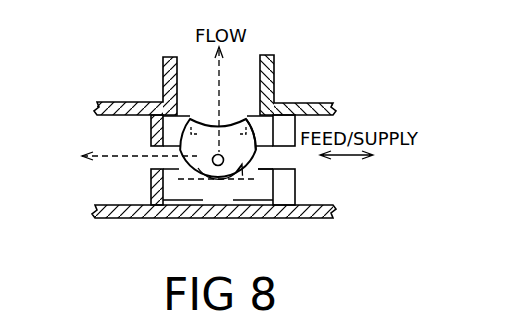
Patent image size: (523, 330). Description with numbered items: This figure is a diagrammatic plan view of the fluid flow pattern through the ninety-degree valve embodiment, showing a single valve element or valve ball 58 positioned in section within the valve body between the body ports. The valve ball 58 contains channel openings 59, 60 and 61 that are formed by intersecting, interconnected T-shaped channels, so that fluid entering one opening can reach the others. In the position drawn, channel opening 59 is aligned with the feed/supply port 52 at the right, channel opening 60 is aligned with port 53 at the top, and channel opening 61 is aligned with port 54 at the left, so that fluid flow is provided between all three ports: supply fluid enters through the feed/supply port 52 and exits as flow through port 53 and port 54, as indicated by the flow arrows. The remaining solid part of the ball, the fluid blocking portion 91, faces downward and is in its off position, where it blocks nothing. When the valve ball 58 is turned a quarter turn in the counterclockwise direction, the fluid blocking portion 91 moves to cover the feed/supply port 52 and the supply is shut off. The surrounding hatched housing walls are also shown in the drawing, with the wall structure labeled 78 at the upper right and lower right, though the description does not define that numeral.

The port 53 is at (192, 51).
The channel opening 60 is at (236, 113).
The housing wall 78 is at (261, 128).
The channel opening 61 is at (167, 159).
The port 54 is at (130, 170).
The valve ball 58 is at (201, 186).
The fluid blocking portion 91 is at (228, 200).
The feed/supply port 52 is at (315, 181).
The channel opening 59 is at (267, 161).